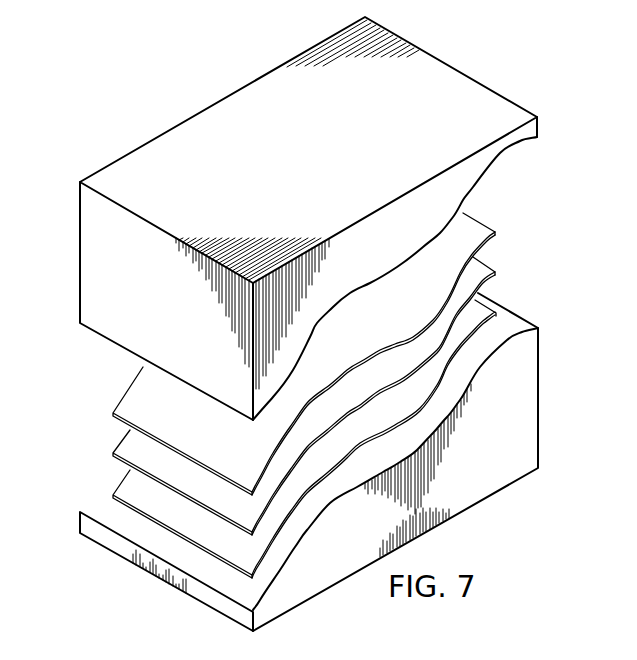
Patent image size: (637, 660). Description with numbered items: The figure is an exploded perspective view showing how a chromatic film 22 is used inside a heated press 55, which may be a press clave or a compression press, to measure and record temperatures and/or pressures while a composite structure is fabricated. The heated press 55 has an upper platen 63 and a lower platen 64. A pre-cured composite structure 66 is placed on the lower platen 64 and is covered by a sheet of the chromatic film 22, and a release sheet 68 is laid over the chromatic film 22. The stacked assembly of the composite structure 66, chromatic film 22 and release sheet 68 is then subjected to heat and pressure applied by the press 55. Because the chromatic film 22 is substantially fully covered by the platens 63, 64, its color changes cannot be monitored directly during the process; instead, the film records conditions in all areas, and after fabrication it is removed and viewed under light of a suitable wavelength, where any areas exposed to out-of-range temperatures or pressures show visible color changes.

The heated press 55 is at (571, 141).
The upper platen 63 is at (80, 250).
The release sheet 68 is at (127, 410).
The chromatic film 22 is at (128, 445).
The pre-cured composite structure 66 is at (128, 485).
The lower platen 64 is at (540, 397).